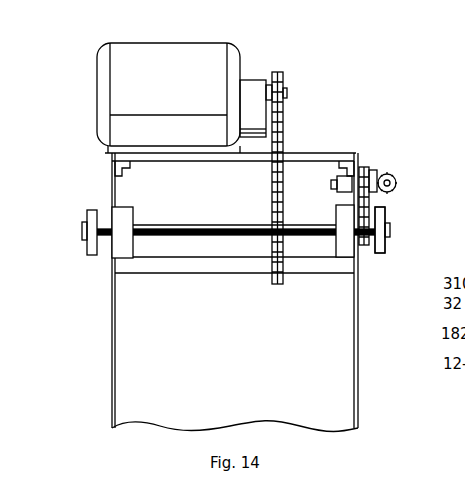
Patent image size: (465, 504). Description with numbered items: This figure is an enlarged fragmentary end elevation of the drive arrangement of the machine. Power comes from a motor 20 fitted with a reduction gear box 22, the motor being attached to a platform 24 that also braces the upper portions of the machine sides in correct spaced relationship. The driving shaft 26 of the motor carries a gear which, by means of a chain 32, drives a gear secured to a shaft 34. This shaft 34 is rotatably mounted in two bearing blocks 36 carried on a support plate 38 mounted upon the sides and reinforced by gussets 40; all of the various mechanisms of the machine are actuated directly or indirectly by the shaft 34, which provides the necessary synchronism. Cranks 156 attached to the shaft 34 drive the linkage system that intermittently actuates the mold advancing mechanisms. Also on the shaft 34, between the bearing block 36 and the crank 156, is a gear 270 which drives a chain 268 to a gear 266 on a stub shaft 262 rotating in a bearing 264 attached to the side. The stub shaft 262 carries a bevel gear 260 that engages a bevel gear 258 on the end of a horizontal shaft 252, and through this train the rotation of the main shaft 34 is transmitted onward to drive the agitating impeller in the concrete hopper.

The motor 20 is at (185, 43).
The reduction gear box 22 is at (256, 80).
The platform 24 is at (218, 160).
The driving shaft 26 is at (287, 92).
The chain 32 is at (283, 122).
The shaft 34 is at (208, 225).
The bearing blocks 36 is at (120, 207).
The support plate 38 is at (188, 273).
The gussets 40 is at (112, 383).
The cranks 156 is at (88, 248).
The horizontal shaft 252 is at (396, 182).
The bevel gear 258 is at (395, 179).
The bevel gear 260 is at (377, 173).
The stub shaft 262 is at (332, 184).
The bearing 264 is at (340, 193).
The gear 266 is at (367, 168).
The chain 268 is at (376, 205).
The gear 270 is at (390, 223).